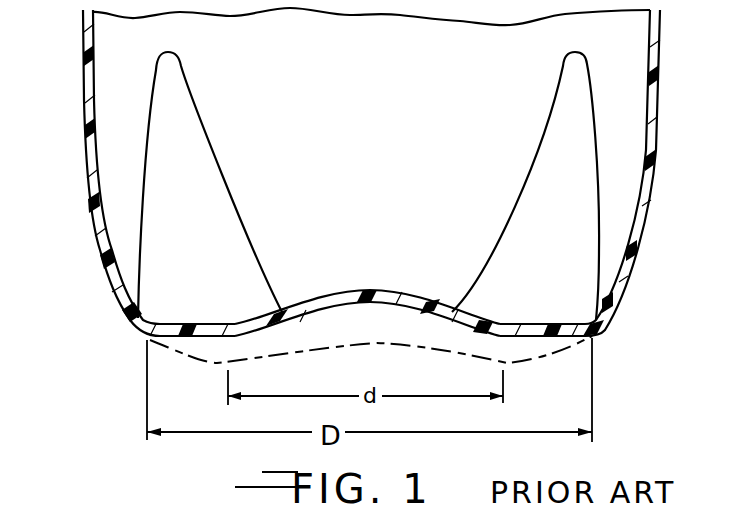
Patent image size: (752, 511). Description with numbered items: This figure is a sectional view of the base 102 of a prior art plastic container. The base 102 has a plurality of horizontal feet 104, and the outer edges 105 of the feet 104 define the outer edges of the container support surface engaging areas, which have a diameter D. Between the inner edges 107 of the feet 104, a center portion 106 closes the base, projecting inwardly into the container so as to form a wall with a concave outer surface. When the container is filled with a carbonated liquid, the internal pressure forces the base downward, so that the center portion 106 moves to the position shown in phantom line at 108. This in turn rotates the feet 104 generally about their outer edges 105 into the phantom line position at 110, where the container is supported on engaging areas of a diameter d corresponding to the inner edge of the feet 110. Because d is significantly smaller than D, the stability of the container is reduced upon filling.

The base 102 is at (96, 297).
The horizontal feet 104 is at (197, 324).
The outer edges of the feet 105 is at (143, 333).
The center portion 106 is at (351, 290).
The inner edges of the feet 107 is at (233, 326).
The phantom line position of the center portion 108 is at (357, 340).
The phantom line position of the feet 110 is at (200, 360).